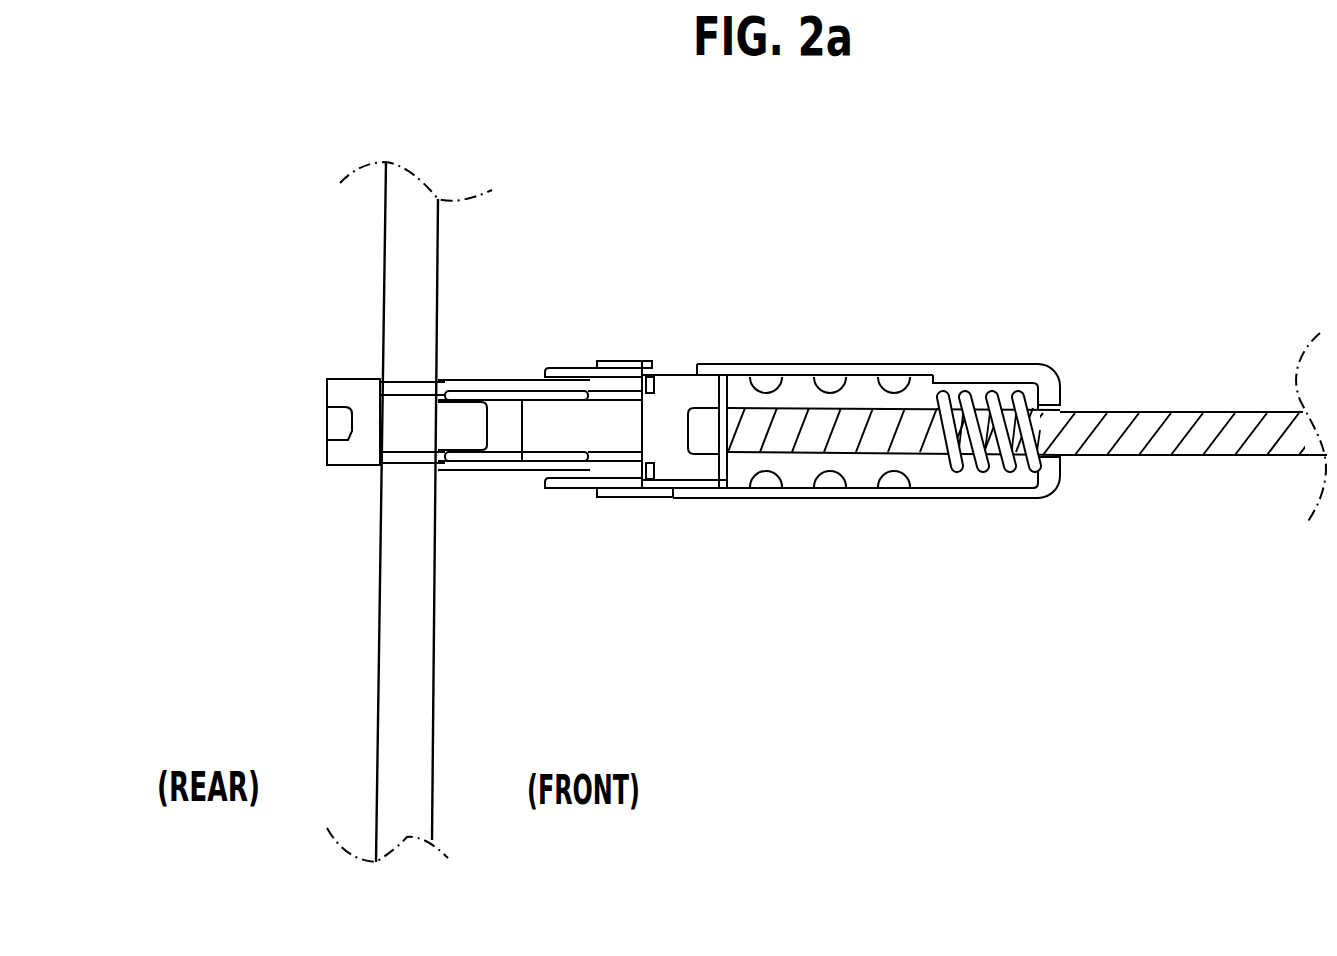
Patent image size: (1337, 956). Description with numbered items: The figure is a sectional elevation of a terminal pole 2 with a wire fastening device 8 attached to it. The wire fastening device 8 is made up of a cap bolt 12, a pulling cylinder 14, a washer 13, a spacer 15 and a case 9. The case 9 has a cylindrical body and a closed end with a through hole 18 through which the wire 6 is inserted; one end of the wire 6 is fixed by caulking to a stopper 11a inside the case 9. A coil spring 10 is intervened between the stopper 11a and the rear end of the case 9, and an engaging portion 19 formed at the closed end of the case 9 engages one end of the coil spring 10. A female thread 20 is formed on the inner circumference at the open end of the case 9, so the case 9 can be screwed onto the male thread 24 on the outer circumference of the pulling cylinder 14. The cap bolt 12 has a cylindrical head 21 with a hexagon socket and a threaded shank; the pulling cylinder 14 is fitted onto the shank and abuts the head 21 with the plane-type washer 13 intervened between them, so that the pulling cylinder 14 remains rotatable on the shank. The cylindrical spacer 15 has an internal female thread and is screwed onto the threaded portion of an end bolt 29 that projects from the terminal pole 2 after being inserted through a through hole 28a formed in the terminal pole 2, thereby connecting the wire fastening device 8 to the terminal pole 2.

The terminal pole 2 is at (398, 625).
The wire 6 is at (1215, 423).
The wire fastening device 8 is at (920, 266).
The case 9 is at (858, 366).
The coil spring 10 is at (991, 368).
The stopper 11a is at (842, 492).
The cap bolt 12 is at (678, 470).
The washer 13 is at (661, 368).
The pulling cylinder 14 is at (585, 364).
The spacer 15 is at (474, 482).
The through hole 18 is at (1050, 490).
The engaging portion 19 is at (1058, 403).
The female thread 20 is at (608, 488).
The head 21 is at (686, 370).
The male thread 24 is at (563, 368).
The through hole 28a is at (397, 381).
The end bolt 29 is at (325, 452).